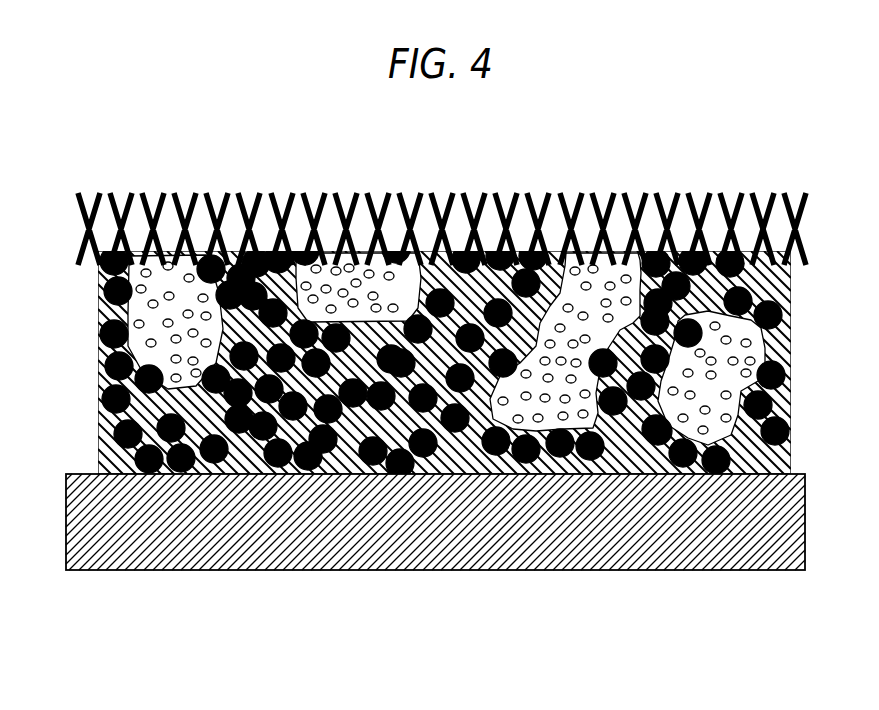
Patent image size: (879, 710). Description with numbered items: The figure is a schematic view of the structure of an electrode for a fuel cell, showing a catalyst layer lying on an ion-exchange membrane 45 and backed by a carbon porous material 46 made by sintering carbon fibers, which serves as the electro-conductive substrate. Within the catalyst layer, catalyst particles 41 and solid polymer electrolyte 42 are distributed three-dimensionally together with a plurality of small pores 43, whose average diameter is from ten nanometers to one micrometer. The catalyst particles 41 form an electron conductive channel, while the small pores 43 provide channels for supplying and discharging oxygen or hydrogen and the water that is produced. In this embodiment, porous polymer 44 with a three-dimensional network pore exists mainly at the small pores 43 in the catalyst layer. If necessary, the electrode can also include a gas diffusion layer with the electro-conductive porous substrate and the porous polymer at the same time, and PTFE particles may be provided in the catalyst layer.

The catalyst particles 41 is at (497, 233).
The solid polymer electrolyte 42 is at (420, 243).
The small pores 43 is at (590, 285).
The porous polymer 44 is at (614, 258).
The ion-exchange membrane 45 is at (135, 575).
The carbon porous material 46 is at (152, 162).